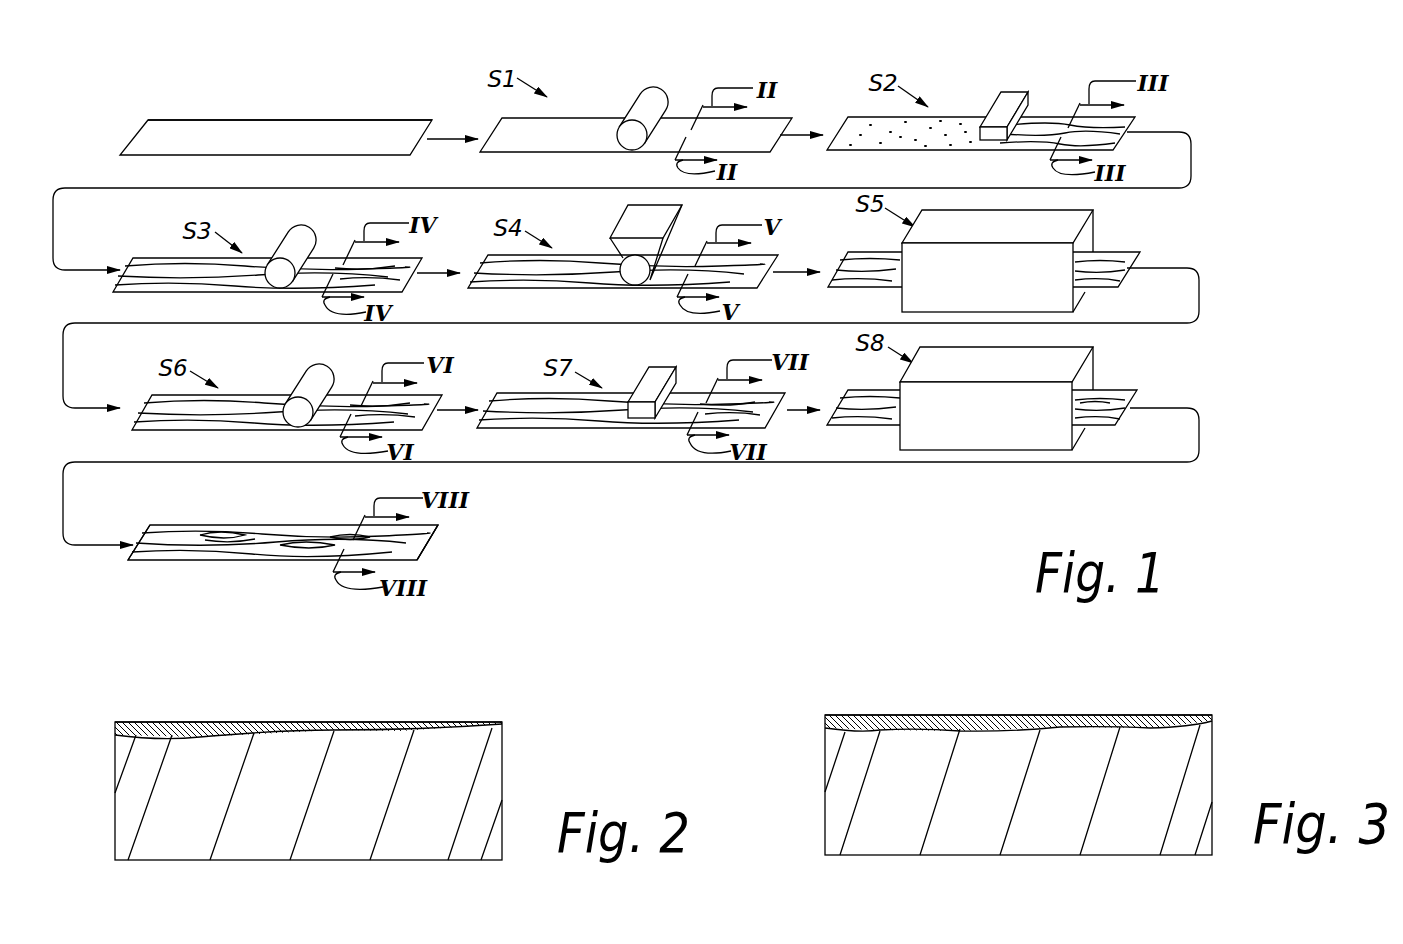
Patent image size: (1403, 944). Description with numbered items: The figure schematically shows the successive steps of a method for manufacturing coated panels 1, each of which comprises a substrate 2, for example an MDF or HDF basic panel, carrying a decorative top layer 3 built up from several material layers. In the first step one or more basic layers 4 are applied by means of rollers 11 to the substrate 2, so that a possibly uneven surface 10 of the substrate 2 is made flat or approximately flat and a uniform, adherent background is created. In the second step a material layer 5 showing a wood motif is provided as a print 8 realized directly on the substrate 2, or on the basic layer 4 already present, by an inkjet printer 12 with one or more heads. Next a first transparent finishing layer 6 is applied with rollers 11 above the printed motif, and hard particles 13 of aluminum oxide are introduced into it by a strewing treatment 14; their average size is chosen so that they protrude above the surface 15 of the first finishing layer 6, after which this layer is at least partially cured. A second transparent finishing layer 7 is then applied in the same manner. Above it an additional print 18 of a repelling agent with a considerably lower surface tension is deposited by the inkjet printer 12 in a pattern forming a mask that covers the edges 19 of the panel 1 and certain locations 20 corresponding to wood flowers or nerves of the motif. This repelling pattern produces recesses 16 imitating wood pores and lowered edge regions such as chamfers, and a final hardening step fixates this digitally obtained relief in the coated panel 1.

In FIG. 1, the coated panel 1 is at (258, 520).
In FIG. 1, the substrate 2 is at (152, 133).
In FIG. 2, the substrate 2 is at (125, 777).
In FIG. 3, the substrate 2 is at (848, 792).
In FIG. 1, the decorative top layer 3 is at (430, 547).
In FIG. 1, the basic layer 4 is at (757, 128).
In FIG. 2, the basic layer 4 is at (502, 722).
In FIG. 3, the basic layer 4 is at (1212, 716).
In FIG. 1, the material layer with motif 5 is at (1068, 120).
In FIG. 3, the material layer with motif 5 is at (1090, 713).
In FIG. 1, the first transparent finishing layer 6 is at (333, 262).
In FIG. 1, the second transparent finishing layer 7 is at (348, 400).
In FIG. 1, the print 8 is at (983, 112).
In FIG. 1, the uneven surface 10 is at (238, 142).
In FIG. 2, the uneven surface 10 is at (196, 733).
In FIG. 1, the roller 11 is at (640, 105).
In FIG. 1, the inkjet printer 12 is at (1016, 100).
In FIG. 1, the hard particles 13 is at (640, 237).
In FIG. 1, the strewing treatment 14 is at (633, 294).
In FIG. 1, the surface of the first finishing layer 15 is at (915, 295).
In FIG. 1, the recesses 16 is at (183, 533).
In FIG. 1, the additional print 18 is at (720, 420).
In FIG. 1, the edges 19 is at (325, 527).
In FIG. 1, the locations 20 is at (218, 537).